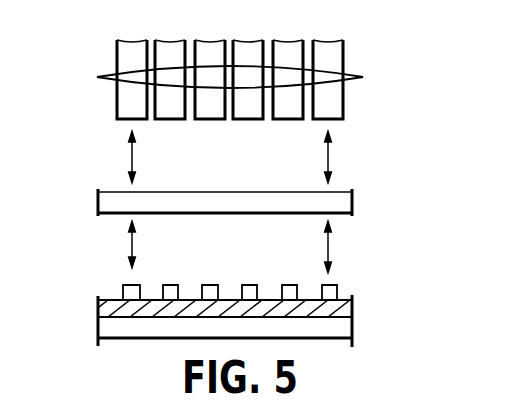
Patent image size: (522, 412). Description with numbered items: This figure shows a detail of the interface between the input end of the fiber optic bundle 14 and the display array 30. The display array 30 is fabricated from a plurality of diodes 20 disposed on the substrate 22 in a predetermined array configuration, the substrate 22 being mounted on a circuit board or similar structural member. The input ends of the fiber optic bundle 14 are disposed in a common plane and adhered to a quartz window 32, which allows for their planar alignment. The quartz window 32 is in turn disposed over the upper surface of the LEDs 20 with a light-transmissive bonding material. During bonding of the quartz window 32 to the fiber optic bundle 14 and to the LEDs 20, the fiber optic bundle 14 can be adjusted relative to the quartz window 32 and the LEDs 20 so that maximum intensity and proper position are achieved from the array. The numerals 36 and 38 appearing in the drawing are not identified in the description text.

The fiber optic bundle 14 is at (97, 77).
The fiber holders 36 is at (230, 59).
The quartz window 32 is at (115, 200).
The diodes 20 is at (163, 284).
The substrate 22 is at (107, 310).
The display array 30 is at (365, 318).
The base layer 38 is at (318, 328).